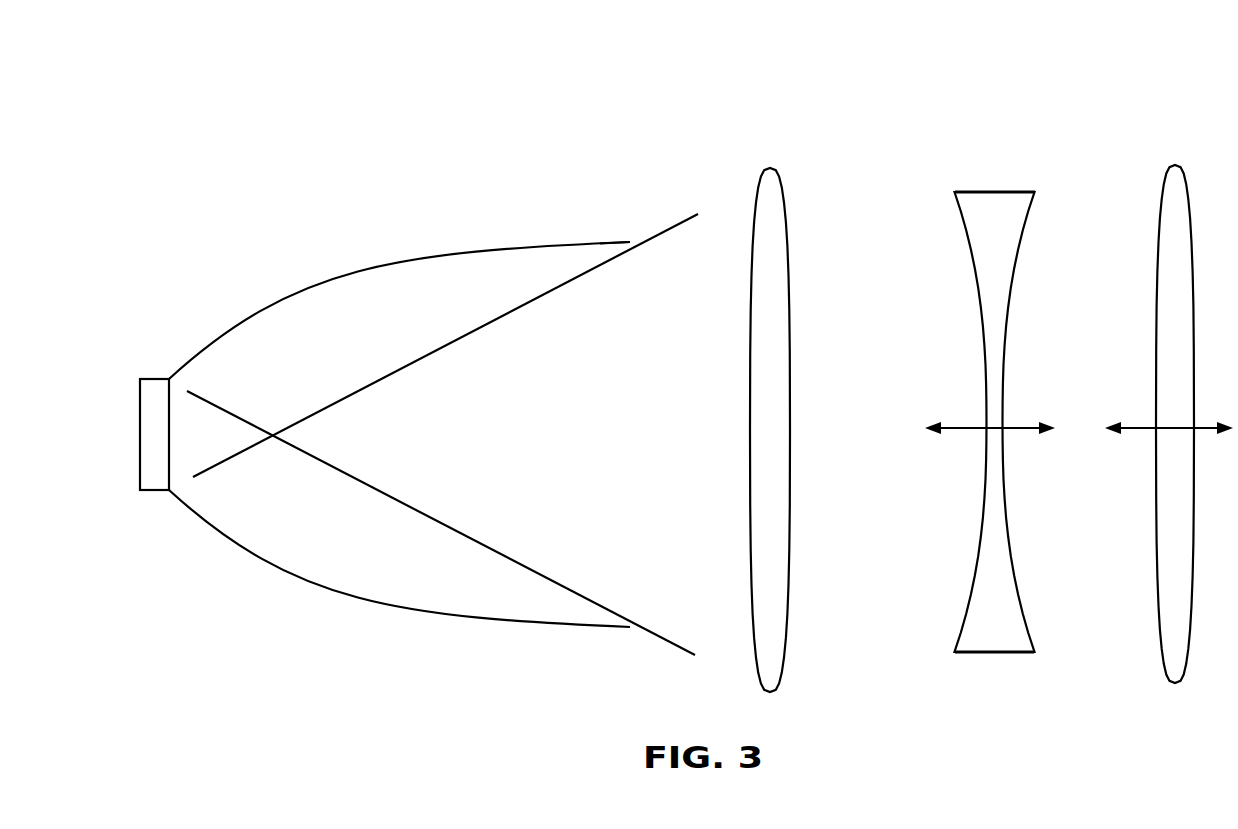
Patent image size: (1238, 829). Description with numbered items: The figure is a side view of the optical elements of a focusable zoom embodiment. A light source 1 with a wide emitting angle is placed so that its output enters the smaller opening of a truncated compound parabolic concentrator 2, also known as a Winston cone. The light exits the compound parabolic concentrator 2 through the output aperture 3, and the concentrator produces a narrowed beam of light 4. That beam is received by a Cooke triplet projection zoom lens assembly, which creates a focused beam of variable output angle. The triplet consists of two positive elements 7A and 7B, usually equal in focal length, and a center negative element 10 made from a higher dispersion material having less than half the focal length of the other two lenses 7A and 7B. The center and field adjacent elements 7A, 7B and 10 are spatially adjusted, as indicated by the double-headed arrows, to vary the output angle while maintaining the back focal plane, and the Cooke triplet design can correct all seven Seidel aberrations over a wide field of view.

The light source 1 is at (154, 370).
The truncated compound parabolic concentrator 2 is at (396, 258).
The output aperture 3 is at (628, 228).
The narrowed beam of light 4 is at (657, 228).
The positive element 7A is at (766, 160).
The center negative element 10 is at (1006, 176).
The positive element 7B is at (1170, 160).